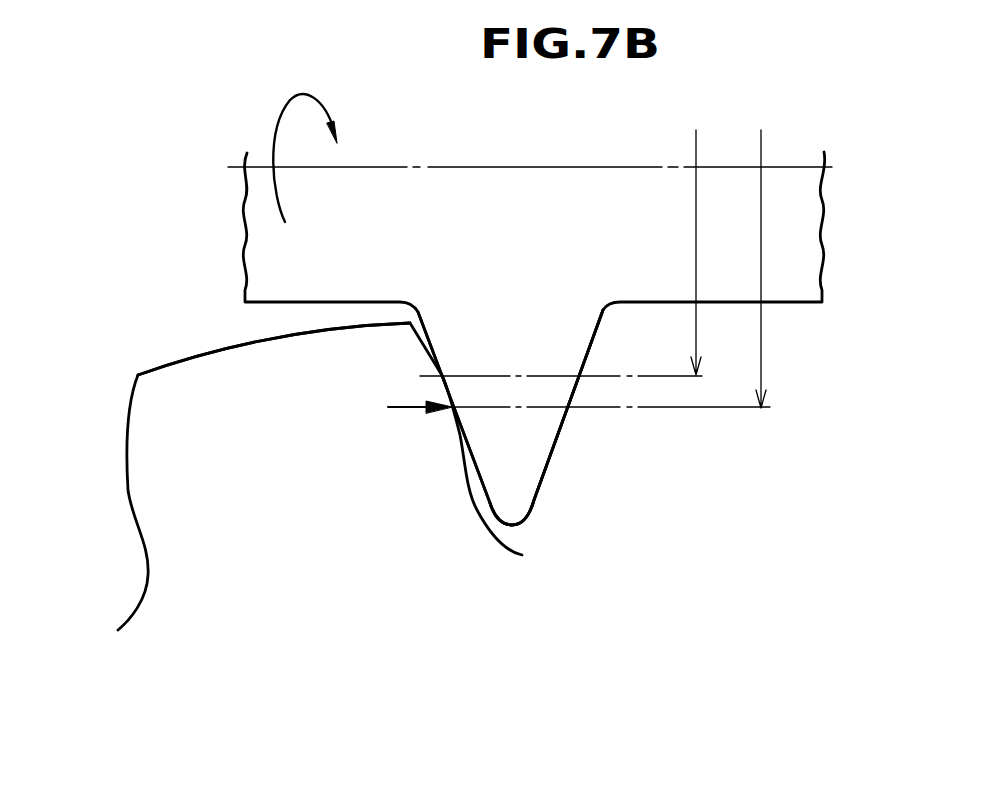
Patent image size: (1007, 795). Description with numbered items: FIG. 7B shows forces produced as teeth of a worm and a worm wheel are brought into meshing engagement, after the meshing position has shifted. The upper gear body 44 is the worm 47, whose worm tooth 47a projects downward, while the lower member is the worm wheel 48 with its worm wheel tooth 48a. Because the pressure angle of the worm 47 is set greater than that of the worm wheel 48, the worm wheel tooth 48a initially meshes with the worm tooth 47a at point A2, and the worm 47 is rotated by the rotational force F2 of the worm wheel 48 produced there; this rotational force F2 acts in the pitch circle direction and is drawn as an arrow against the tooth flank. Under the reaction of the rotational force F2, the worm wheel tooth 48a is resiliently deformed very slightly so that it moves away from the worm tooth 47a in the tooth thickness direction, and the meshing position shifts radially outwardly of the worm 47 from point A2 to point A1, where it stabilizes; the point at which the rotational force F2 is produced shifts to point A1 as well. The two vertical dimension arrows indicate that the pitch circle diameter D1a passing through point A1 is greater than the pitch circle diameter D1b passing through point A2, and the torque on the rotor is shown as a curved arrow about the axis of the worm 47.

The sprocket / drive member 44 is at (178, 160).
The worm 47 is at (801, 377).
The worm tooth 47a is at (530, 480).
The worm wheel 48 is at (85, 440).
The worm wheel tooth 48a is at (172, 388).
The pitch circle diameter D1a is at (762, 146).
The pitch circle diameter D1b is at (696, 238).
The point A1 is at (453, 408).
The point A2 is at (445, 373).
The rotational force (axial force) F2 is at (397, 408).